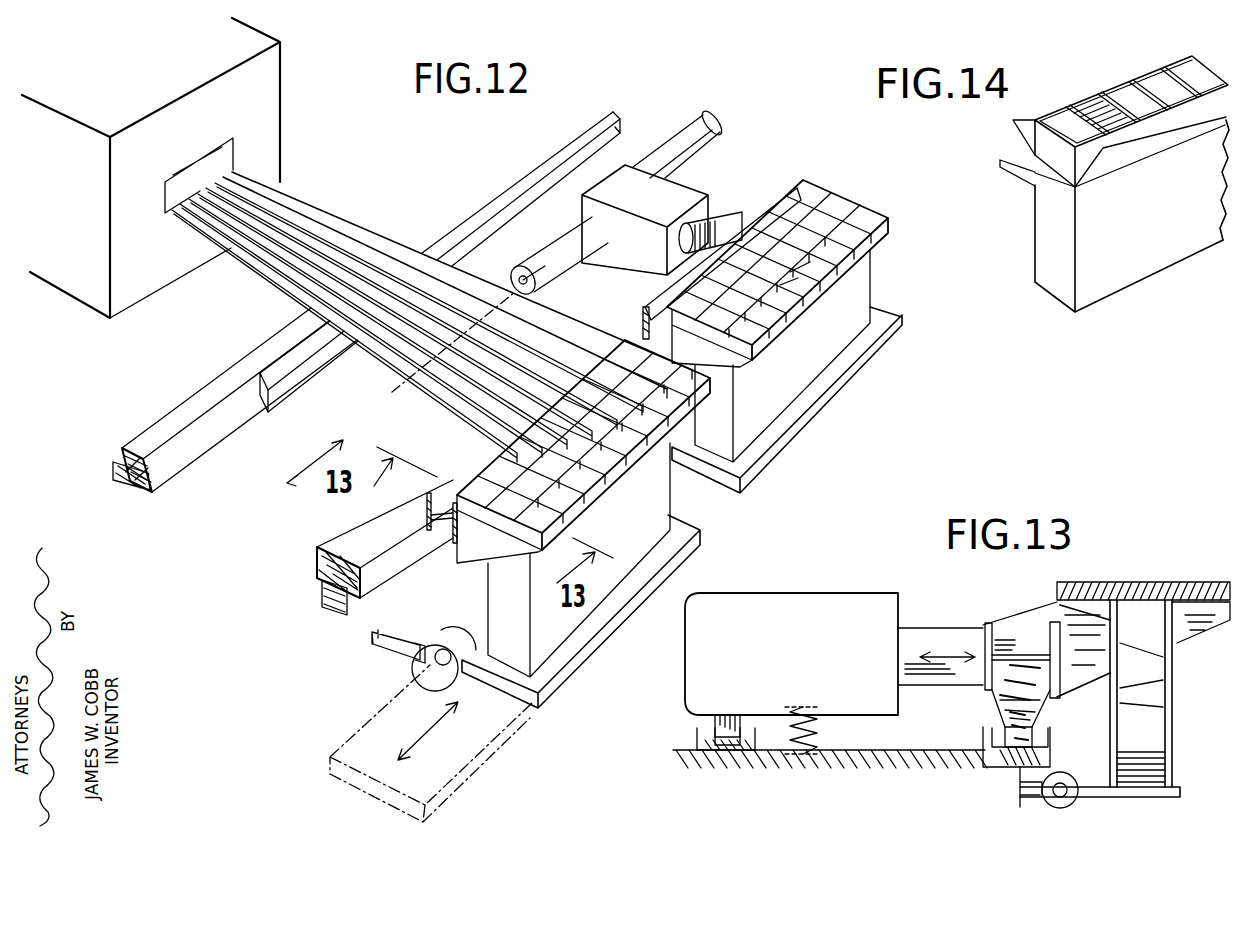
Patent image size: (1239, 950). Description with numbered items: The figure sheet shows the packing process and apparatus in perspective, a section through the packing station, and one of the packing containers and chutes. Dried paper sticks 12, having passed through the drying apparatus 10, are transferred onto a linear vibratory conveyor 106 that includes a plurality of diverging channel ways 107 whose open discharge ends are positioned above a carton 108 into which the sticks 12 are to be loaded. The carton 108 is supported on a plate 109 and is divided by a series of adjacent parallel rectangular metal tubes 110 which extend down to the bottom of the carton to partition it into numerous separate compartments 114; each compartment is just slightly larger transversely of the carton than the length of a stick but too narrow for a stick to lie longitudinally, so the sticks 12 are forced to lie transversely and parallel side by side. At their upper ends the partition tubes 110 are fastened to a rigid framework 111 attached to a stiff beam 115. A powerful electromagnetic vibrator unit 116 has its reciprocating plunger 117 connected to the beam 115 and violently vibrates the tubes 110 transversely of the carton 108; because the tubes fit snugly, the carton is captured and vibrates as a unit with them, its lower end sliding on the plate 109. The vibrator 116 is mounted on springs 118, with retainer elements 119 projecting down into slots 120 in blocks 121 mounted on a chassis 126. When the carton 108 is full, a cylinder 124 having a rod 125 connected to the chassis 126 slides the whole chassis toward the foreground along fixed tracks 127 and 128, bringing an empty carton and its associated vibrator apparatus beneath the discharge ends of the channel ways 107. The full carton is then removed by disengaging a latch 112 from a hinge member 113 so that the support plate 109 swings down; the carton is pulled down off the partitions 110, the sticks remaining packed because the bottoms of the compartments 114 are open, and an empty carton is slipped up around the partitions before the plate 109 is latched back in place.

In FIG. 12, the drying apparatus 10 is at (257, 110).
In FIG. 12, the linear vibratory conveyor 106 is at (335, 211).
In FIG. 12, the diverging channel ways 107 is at (260, 248).
In FIG. 12, the carton 108 is at (672, 503).
In FIG. 13, the carton 108 is at (1172, 680).
In FIG. 14, the carton 108 is at (1050, 235).
In FIG. 12, the plate 109 is at (483, 765).
In FIG. 13, the plate 109 is at (1180, 792).
In FIG. 12, the rectangular metal tubes 110 is at (848, 210).
In FIG. 13, the rectangular metal tubes 110 is at (1126, 590).
In FIG. 14, the rectangular metal tubes 110 is at (1058, 118).
In FIG. 12, the rigid framework 111 is at (474, 542).
In FIG. 13, the rigid framework 111 is at (1212, 585).
In FIG. 12, the latch 112 is at (402, 640).
In FIG. 13, the latch 112 is at (1020, 785).
In FIG. 12, the hinge member 113 is at (418, 670).
In FIG. 13, the hinge member 113 is at (1063, 800).
In FIG. 12, the compartments 114 is at (790, 268).
In FIG. 12, the stiff beam 115 is at (428, 502).
In FIG. 12, the electromagnetic vibrator unit 116 is at (656, 205).
In FIG. 13, the electromagnetic vibrator unit 116 is at (819, 581).
In FIG. 12, the reciprocating plunger 117 is at (716, 240).
In FIG. 13, the reciprocating plunger 117 is at (940, 640).
In FIG. 13, the springs 118 is at (815, 735).
In FIG. 13, the retainer elements 119 is at (1040, 705).
In FIG. 13, the slots 120 is at (1040, 740).
In FIG. 13, the blocks 121 is at (983, 745).
In FIG. 12, the cylinder 124 is at (675, 140).
In FIG. 12, the rod 125 is at (518, 273).
In FIG. 12, the chassis 126 is at (320, 563).
In FIG. 12, the fixed track 127 is at (137, 487).
In FIG. 12, the fixed track 128 is at (322, 598).
In FIG. 13, the sticks 12 is at (1165, 770).
In FIG. 14, the sticks 12 is at (1103, 100).